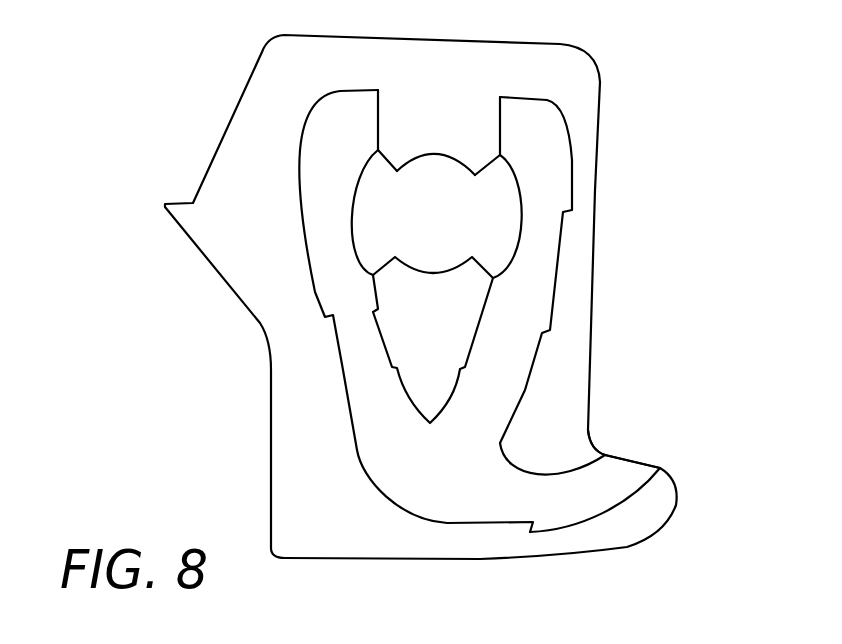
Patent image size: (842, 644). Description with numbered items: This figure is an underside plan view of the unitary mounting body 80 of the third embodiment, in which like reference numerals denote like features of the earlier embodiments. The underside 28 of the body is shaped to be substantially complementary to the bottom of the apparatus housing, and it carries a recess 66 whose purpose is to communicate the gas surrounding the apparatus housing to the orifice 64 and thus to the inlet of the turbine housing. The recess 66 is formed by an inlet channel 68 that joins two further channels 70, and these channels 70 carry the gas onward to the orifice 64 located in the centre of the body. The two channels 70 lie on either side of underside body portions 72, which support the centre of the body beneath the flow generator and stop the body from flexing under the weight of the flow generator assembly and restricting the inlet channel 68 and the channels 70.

The underside 28 is at (250, 155).
The unitary mounting body 80 is at (636, 135).
The orifice 64 is at (366, 219).
The recess 66 is at (376, 448).
The inlet channel 68 is at (620, 478).
The channels 70 is at (333, 290).
The underside body portions 72 is at (437, 142).